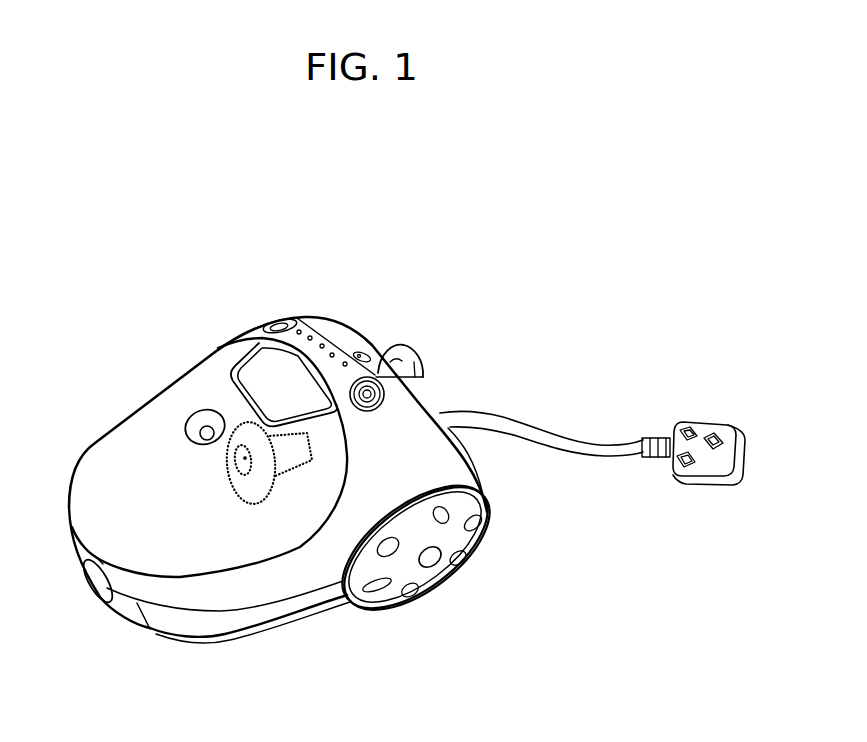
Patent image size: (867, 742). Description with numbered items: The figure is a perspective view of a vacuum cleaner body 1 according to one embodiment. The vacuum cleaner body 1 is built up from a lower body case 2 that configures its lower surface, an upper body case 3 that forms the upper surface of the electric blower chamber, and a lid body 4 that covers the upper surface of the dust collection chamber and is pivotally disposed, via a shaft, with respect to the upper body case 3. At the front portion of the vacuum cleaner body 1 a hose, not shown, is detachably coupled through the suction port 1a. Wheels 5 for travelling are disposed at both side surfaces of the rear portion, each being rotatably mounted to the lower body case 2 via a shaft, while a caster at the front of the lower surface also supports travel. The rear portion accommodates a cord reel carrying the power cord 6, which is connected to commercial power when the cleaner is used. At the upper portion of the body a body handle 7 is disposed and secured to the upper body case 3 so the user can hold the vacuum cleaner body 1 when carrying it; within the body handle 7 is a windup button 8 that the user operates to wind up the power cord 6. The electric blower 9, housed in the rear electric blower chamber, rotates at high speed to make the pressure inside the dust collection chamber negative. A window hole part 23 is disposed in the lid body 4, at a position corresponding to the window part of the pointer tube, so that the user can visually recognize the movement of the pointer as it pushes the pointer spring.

The vacuum cleaner body 1 is at (676, 692).
The suction port 1a is at (97, 582).
The lower body case 2 is at (228, 612).
The upper body case 3 is at (420, 396).
The lid body 4 is at (157, 467).
The wheels 5 is at (430, 573).
The power cord 6 is at (557, 437).
The body handle 7 is at (323, 347).
The windup button 8 is at (377, 370).
The electric blower 9 is at (248, 436).
The window hole part 23 is at (203, 428).